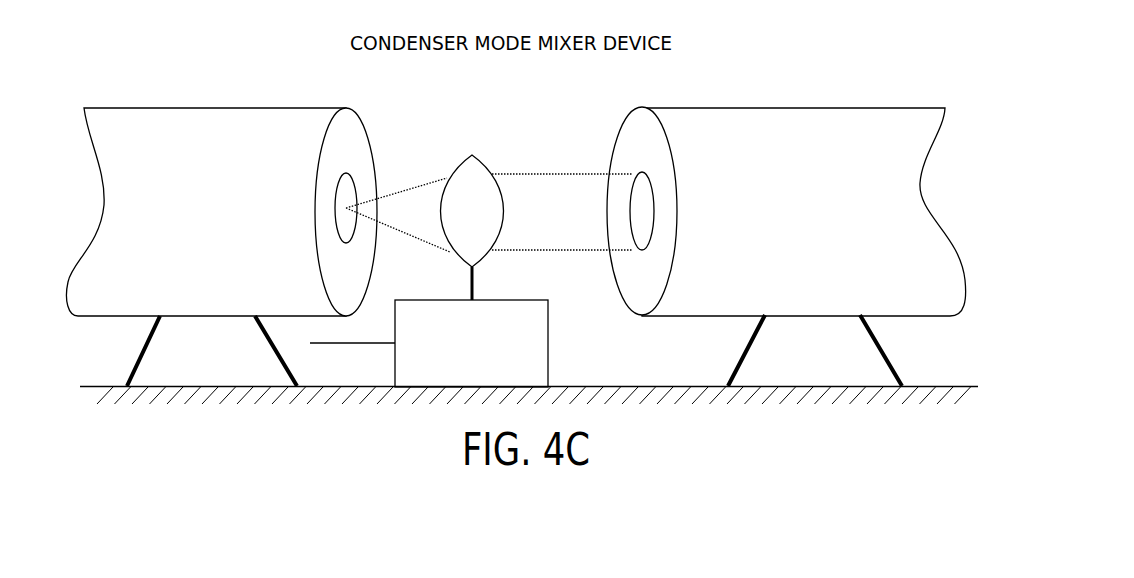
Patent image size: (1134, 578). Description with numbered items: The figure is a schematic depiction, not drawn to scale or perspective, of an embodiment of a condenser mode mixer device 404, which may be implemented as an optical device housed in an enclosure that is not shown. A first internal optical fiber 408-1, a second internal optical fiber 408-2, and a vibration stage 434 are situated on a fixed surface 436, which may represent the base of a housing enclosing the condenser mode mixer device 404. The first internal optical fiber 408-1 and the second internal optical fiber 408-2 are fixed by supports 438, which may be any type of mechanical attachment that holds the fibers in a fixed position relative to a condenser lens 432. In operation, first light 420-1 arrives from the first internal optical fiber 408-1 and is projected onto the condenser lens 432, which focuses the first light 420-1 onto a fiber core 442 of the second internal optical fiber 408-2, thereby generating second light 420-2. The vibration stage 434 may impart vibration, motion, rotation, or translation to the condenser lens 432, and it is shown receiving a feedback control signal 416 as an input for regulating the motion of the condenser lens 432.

The condenser mode mixer device 404 is at (252, 55).
The first internal optical fiber 408-1 is at (818, 107).
The second internal optical fiber 408-2 is at (133, 107).
The feedback control signal 416 is at (385, 343).
The first light 420-1 is at (558, 173).
The second light 420-2 is at (422, 185).
The condenser lens 432 is at (474, 160).
The vibration stage 434 is at (455, 381).
The fixed surface 436 is at (641, 376).
The supports 438 is at (143, 357).
The fiber core 442 is at (346, 240).